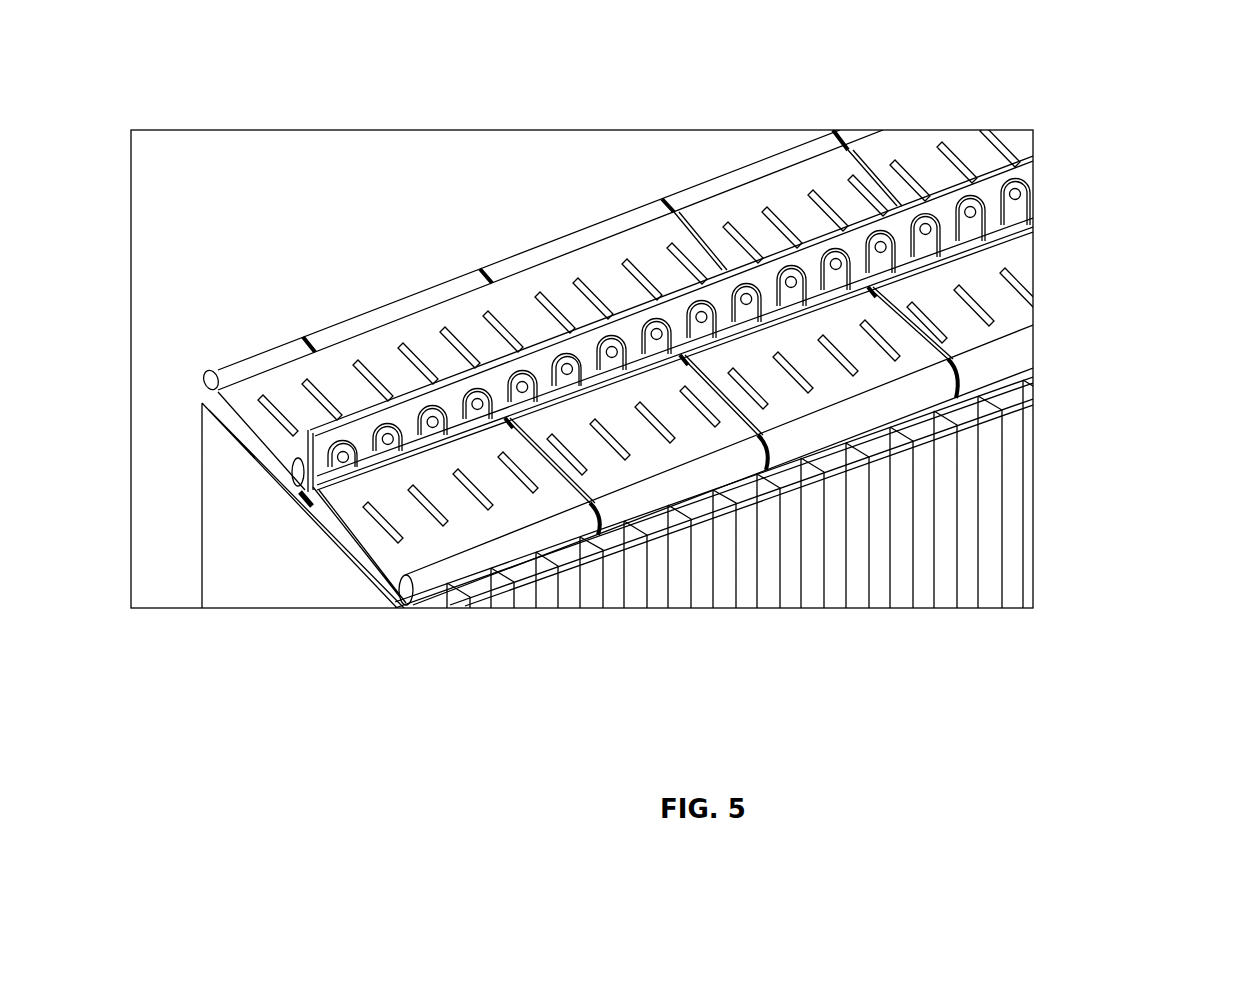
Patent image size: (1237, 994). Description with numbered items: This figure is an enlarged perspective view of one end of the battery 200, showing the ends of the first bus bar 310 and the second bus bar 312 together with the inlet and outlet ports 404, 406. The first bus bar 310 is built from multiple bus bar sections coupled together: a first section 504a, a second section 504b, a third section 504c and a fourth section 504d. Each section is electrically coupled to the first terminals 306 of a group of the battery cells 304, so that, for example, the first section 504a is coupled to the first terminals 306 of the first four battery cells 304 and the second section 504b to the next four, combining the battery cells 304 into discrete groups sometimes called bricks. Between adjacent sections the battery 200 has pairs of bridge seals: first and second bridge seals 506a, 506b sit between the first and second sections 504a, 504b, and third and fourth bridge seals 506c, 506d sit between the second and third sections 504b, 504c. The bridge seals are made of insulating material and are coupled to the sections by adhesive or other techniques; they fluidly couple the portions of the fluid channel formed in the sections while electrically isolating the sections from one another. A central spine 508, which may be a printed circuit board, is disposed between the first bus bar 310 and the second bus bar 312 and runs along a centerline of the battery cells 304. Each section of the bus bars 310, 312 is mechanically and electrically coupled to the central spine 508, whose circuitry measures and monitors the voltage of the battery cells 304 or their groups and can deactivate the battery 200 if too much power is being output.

The battery 200 is at (235, 246).
The battery cells 304 is at (800, 570).
The first terminals 306 is at (387, 523).
The first bus bar 310 is at (657, 450).
The second bus bar 312 is at (745, 205).
The inlet port 404 is at (303, 497).
The outlet port 406 is at (400, 607).
The first section 504a is at (398, 490).
The second section 504b is at (627, 405).
The third section 504c is at (868, 352).
The fourth section 504d is at (997, 325).
The first bridge seal 506a is at (598, 540).
The second bridge seal 506b is at (507, 425).
The third bridge seal 506c is at (770, 460).
The fourth bridge seal 506d is at (688, 355).
The central spine 508 is at (993, 175).